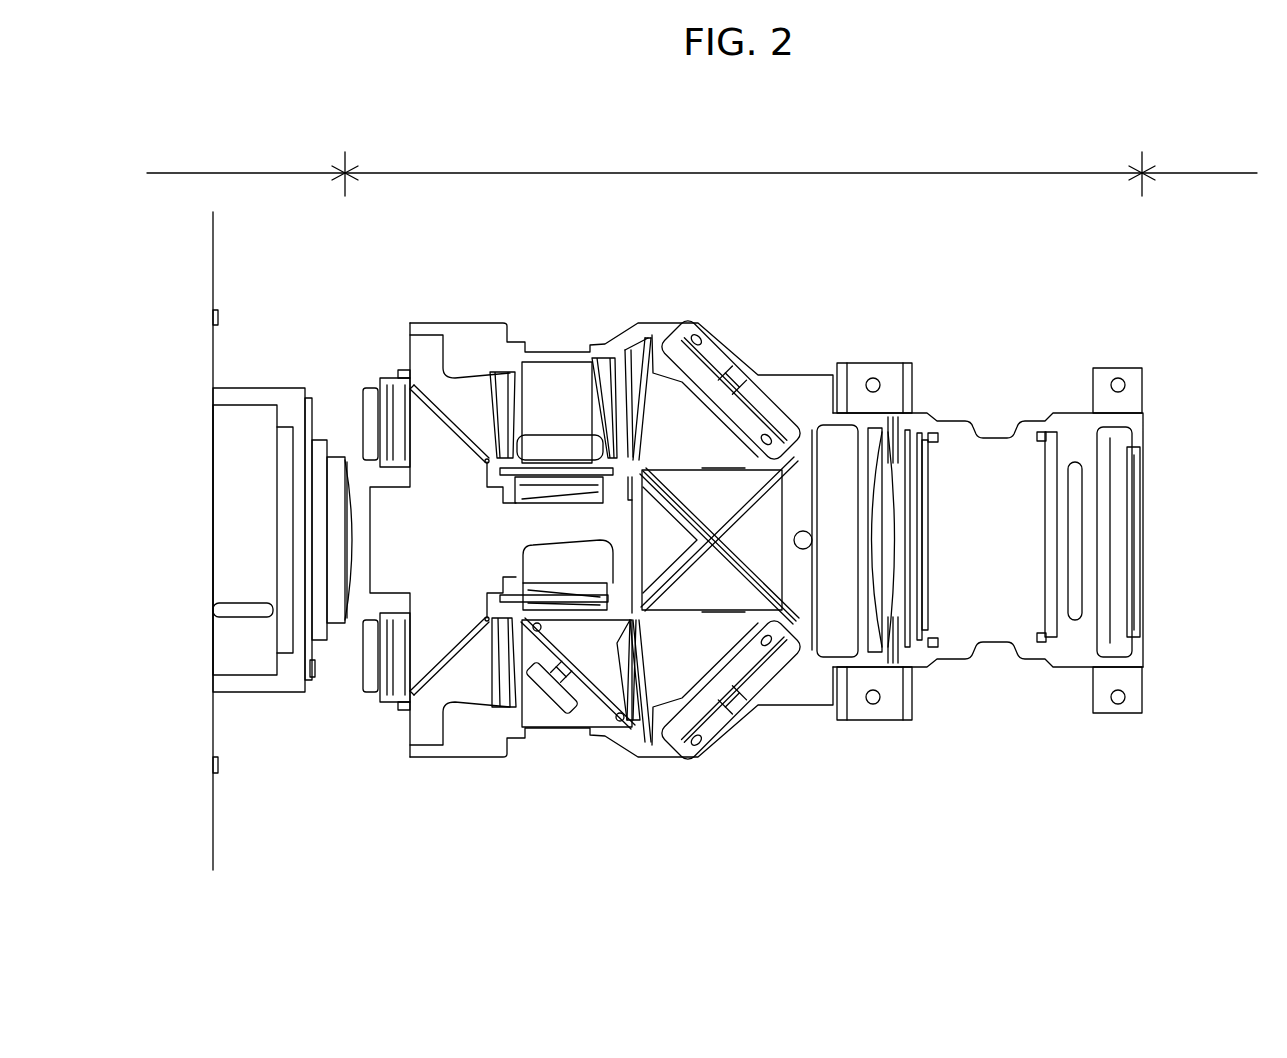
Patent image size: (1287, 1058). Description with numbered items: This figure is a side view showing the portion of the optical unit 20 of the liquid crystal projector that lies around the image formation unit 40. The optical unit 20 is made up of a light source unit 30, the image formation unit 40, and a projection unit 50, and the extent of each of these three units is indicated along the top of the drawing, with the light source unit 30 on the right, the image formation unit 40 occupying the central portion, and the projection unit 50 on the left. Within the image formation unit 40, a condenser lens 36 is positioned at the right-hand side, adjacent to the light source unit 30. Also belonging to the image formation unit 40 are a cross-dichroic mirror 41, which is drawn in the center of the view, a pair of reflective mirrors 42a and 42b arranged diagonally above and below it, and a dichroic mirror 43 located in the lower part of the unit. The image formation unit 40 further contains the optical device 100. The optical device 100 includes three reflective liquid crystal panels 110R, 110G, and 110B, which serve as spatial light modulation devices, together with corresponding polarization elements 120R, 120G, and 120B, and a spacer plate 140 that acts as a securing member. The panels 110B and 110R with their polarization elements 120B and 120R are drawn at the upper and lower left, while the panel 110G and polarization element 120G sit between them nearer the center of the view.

The optical unit 20 is at (891, 146).
The light source unit 30 is at (1193, 171).
The image formation unit 40 is at (743, 160).
The projection unit 50 is at (252, 171).
The optical device 100 is at (284, 240).
The reflective liquid crystal panel 110B is at (392, 380).
The reflective liquid crystal panel 110G is at (533, 487).
The reflective liquid crystal panel 110R is at (387, 702).
The polarization element 120B is at (452, 430).
The polarization element 120G is at (558, 505).
The polarization element 120R is at (453, 657).
The spacer plate 140 is at (440, 470).
The condenser lens 36 is at (880, 483).
The cross-dichroic mirror 41 is at (765, 443).
The reflective mirror 42a is at (697, 362).
The reflective mirror 42b is at (702, 722).
The dichroic mirror 43 is at (590, 697).